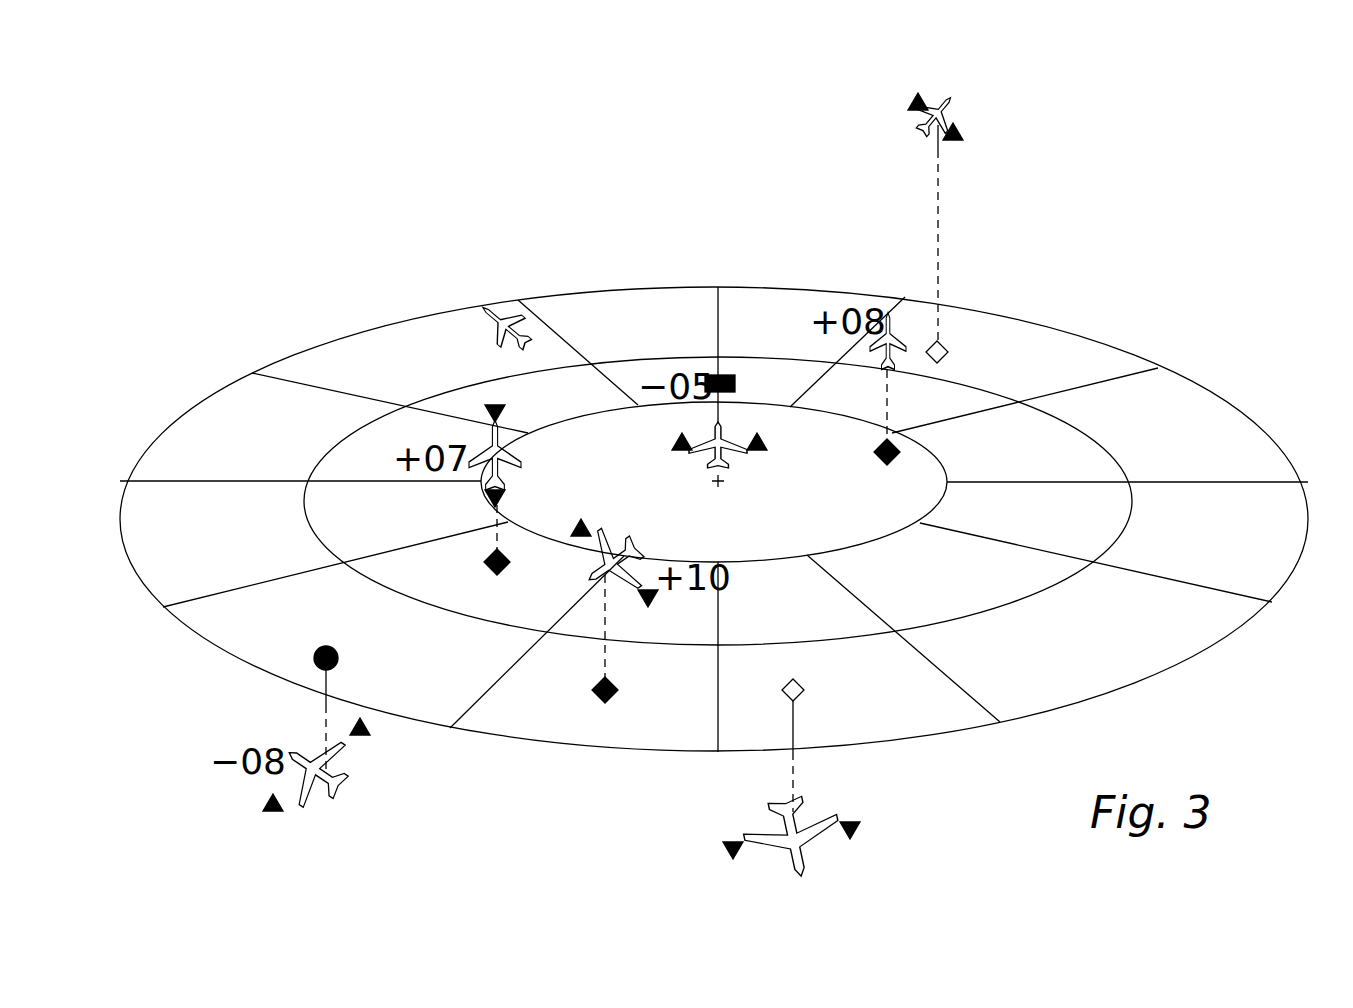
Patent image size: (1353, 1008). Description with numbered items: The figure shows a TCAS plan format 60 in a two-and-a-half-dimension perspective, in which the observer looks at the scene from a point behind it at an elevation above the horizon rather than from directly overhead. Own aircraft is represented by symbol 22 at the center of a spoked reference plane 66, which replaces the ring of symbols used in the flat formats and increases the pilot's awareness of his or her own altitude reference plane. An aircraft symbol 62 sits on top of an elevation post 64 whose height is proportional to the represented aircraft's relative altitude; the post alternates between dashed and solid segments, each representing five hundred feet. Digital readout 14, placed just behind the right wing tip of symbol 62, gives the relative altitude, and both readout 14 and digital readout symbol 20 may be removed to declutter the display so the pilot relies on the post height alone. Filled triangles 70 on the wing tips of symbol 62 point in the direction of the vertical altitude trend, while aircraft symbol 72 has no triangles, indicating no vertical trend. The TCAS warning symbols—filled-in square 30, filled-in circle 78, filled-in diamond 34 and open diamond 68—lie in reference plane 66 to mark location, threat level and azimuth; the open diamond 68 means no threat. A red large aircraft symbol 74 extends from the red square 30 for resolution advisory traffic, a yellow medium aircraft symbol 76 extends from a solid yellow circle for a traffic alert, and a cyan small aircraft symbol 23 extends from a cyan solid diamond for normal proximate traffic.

The digital readout 14 is at (698, 812).
The digital readout symbol 20 is at (690, 798).
The own aircraft symbol 22 is at (722, 483).
The small aircraft symbol 23 is at (882, 372).
The filled-in square 30 is at (737, 385).
The filled-in diamond 34 is at (616, 690).
The TCAS plan format 60 is at (1137, 296).
The aircraft symbol 62 is at (946, 106).
The elevation post 64 is at (796, 728).
The reference plane 66 is at (1229, 542).
The open diamond 68 is at (804, 689).
The filled triangles 70 is at (858, 838).
The aircraft symbol 72 is at (482, 305).
The large aircraft symbol 74 is at (700, 453).
The medium aircraft symbol 76 is at (262, 803).
The filled-in circle 78 is at (338, 657).